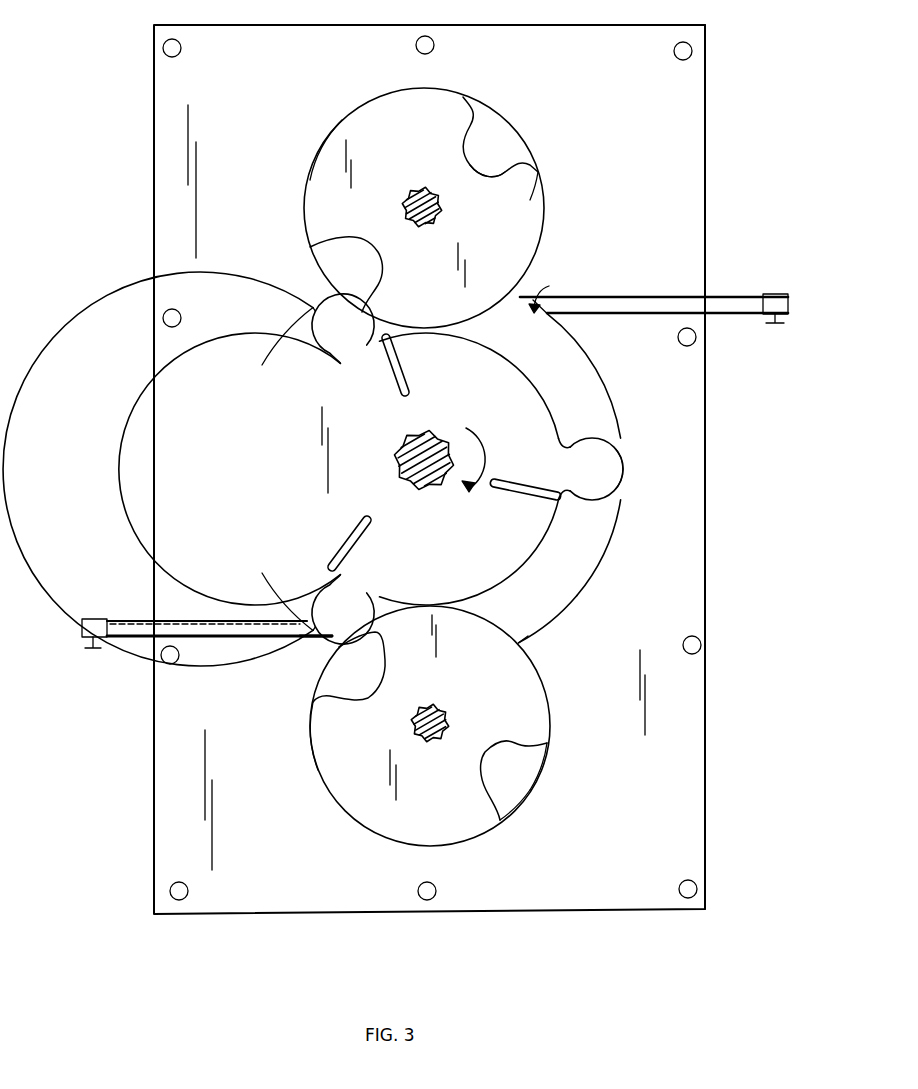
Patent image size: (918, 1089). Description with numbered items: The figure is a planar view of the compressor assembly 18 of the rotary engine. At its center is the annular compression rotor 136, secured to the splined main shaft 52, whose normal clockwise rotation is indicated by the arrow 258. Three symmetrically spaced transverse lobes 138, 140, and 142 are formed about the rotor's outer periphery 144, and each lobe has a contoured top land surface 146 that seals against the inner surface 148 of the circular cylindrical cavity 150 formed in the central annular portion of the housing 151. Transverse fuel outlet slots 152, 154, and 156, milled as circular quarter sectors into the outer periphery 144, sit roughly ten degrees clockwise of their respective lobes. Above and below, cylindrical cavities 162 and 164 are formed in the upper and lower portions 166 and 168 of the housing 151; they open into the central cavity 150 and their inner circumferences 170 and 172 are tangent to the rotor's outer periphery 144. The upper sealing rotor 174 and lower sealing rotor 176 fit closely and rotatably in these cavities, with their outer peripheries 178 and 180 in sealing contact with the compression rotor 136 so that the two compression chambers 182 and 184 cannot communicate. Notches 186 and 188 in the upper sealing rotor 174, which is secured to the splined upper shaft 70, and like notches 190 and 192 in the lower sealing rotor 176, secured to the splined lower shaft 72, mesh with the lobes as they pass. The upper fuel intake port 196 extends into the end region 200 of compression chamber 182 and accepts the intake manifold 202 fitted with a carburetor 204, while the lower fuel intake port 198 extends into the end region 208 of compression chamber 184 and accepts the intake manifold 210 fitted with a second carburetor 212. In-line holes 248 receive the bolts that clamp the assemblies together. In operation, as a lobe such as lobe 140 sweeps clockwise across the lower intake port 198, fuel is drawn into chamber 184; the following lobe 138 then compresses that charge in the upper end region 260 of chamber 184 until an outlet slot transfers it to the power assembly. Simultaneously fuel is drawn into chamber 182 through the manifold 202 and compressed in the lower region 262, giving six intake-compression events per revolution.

The compressor assembly 18 is at (153, 812).
The splined main shaft 52 is at (395, 458).
The splined upper shaft 70 is at (408, 198).
The splined lower shaft 72 is at (431, 706).
The annular compression rotor 136 is at (469, 564).
The lobe 138 is at (599, 475).
The lobe 140 is at (346, 623).
The lobe 142 is at (349, 327).
The outer periphery 144 is at (570, 557).
The top land surface 146 is at (617, 470).
The inner surface 148 is at (603, 403).
The circular cylindrical cavity 150 is at (550, 622).
The housing 151 is at (706, 574).
The transverse fuel outlet slot 152 is at (514, 480).
The transverse fuel outlet slot 154 is at (378, 527).
The transverse fuel outlet slot 156 is at (407, 366).
The cylindrical cavity 162 is at (534, 153).
The cylindrical cavity 164 is at (505, 816).
The upper portion 166 is at (661, 151).
The lower portion 168 is at (661, 827).
The inner circumference 170 is at (507, 132).
The inner circumference 172 is at (538, 775).
The upper sealing rotor 174 is at (503, 231).
The lower sealing rotor 176 is at (483, 666).
The outer periphery 178 is at (338, 140).
The outer periphery 180 is at (313, 747).
The compression chamber 182 is at (564, 384).
The compression chamber 184 is at (266, 456).
The notch 186 is at (384, 272).
The notch 188 is at (473, 169).
The notch 190 is at (366, 700).
The notch 192 is at (486, 766).
The upper fuel intake port 196 is at (549, 290).
The lower fuel intake port 198 is at (298, 638).
The end region 200 is at (545, 357).
The intake manifold 202 is at (614, 297).
The carburetor 204 is at (775, 296).
The end region 208 is at (290, 556).
The intake manifold 210 is at (212, 638).
The second carburetor 212 is at (90, 620).
The in-line hole 248 is at (434, 46).
The arrow 258 is at (473, 445).
The upper end region 260 is at (284, 366).
The lower region 262 is at (550, 577).